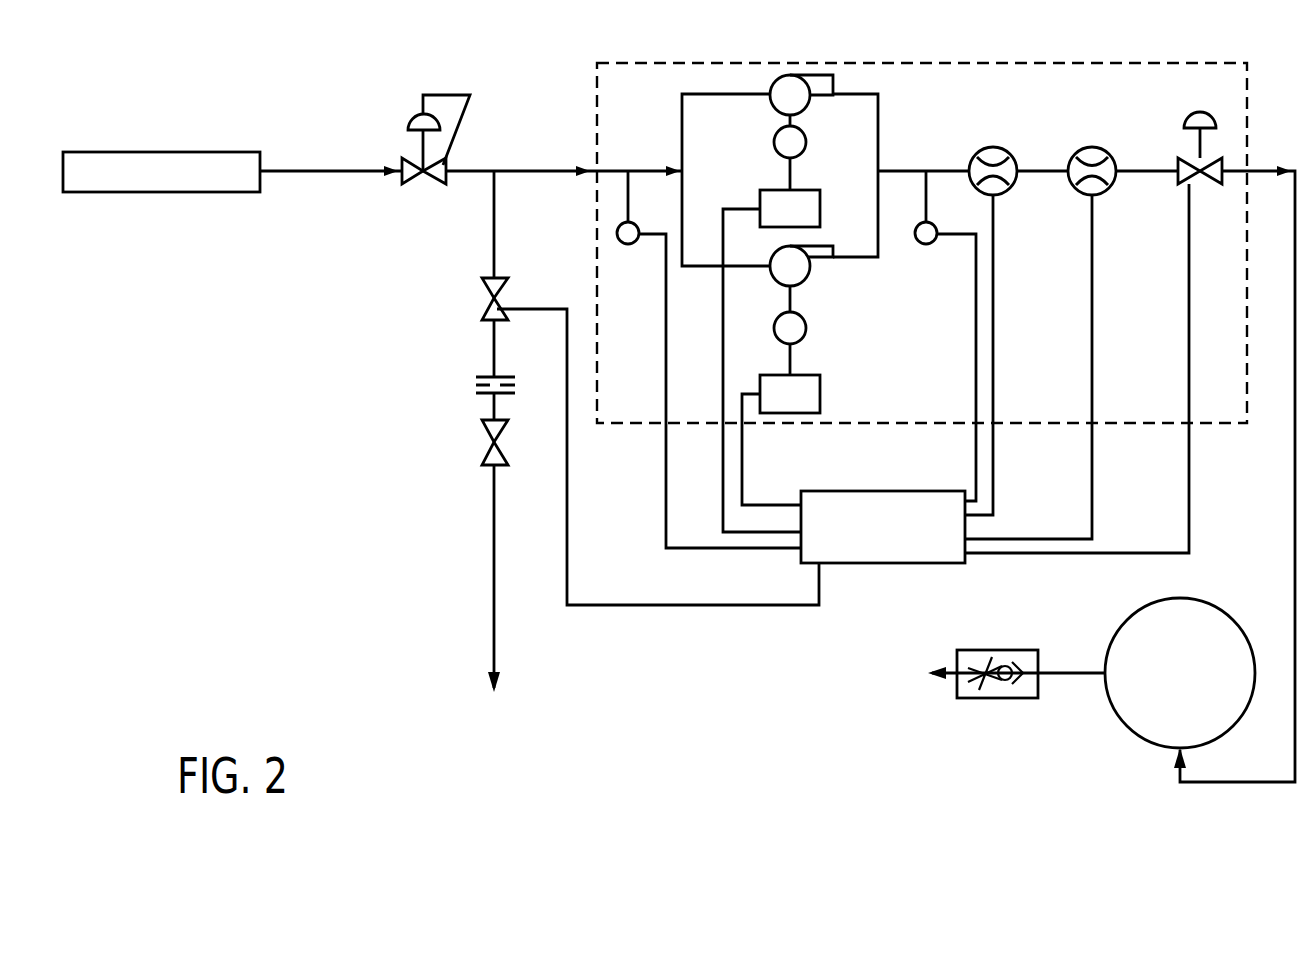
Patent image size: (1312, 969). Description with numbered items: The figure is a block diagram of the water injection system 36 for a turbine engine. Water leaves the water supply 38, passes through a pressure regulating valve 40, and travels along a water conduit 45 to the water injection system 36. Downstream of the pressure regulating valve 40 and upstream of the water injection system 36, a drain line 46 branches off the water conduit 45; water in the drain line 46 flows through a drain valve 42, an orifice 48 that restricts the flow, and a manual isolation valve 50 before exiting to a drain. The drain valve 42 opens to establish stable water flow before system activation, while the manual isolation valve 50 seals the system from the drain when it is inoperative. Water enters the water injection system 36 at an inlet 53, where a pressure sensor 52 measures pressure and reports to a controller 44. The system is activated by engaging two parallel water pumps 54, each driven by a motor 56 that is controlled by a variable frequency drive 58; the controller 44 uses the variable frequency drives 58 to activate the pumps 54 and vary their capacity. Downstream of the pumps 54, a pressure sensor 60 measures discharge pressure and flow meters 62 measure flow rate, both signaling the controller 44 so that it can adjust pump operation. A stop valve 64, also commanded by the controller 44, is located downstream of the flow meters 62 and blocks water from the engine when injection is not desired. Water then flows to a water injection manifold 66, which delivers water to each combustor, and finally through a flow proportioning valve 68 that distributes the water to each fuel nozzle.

The water injection system 36 is at (922, 62).
The water supply 38 is at (160, 151).
The pressure regulating valve 40 is at (448, 93).
The drain valve 42 is at (481, 291).
The controller 44 is at (884, 490).
The water conduit 45 is at (513, 171).
The drain line 46 is at (492, 530).
The orifice 48 is at (476, 389).
The manual isolation valve 50 is at (481, 454).
The pressure sensor 52 is at (628, 244).
The inlet 53 is at (608, 170).
The water pump 54 is at (812, 74).
The motor 56 is at (775, 142).
The variable frequency drive 58 is at (821, 209).
The pressure sensor 60 is at (926, 244).
The flow meter 62 is at (1090, 147).
The stop valve 64 is at (1190, 113).
The water injection manifold 66 is at (1225, 608).
The flow proportioning valve 68 is at (998, 650).